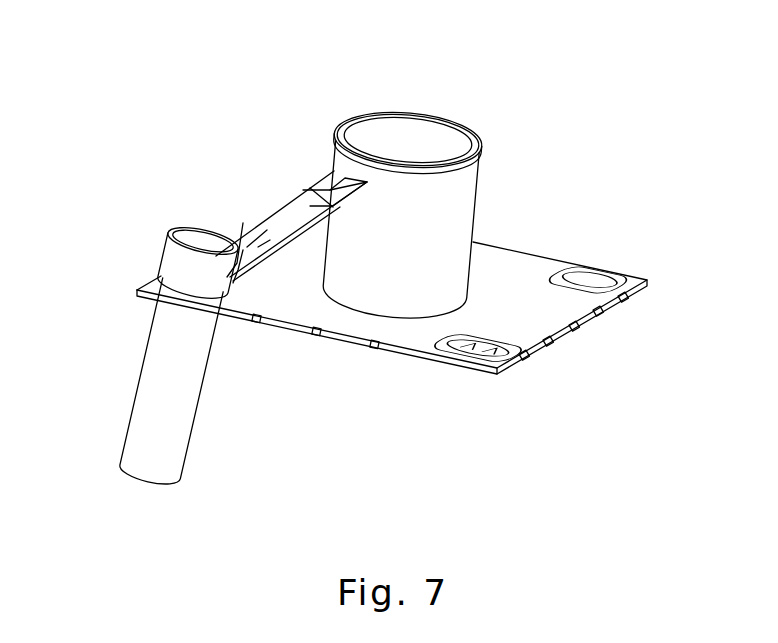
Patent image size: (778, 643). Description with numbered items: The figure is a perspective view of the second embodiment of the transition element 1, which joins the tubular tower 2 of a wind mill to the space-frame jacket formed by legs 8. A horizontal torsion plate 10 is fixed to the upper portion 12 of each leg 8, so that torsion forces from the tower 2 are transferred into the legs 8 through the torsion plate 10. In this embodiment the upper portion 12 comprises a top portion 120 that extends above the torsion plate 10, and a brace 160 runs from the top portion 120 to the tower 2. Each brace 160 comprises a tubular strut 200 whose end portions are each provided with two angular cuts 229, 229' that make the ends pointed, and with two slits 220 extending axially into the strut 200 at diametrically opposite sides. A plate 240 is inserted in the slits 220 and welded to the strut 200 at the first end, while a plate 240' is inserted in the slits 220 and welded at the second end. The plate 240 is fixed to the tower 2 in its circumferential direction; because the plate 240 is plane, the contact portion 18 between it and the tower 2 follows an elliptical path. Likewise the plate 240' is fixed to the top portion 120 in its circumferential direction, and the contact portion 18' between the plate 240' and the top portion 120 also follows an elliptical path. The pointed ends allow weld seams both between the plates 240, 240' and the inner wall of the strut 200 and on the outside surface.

The transition element 1 is at (182, 96).
The tower 2 is at (504, 120).
The legs 8 is at (230, 412).
The horizontal torsion plate 10 is at (528, 252).
The upper portion 12 is at (150, 323).
The contact portion 18 is at (315, 123).
The contact portion 18' is at (270, 313).
The top portion 120 is at (167, 253).
The brace 160 is at (300, 285).
The tubular strut 200 is at (282, 218).
The slits 220 is at (313, 203).
The angular cut 229 is at (263, 141).
The angular cut 229' is at (192, 205).
The plate 240 is at (316, 142).
The plate 240' is at (205, 218).